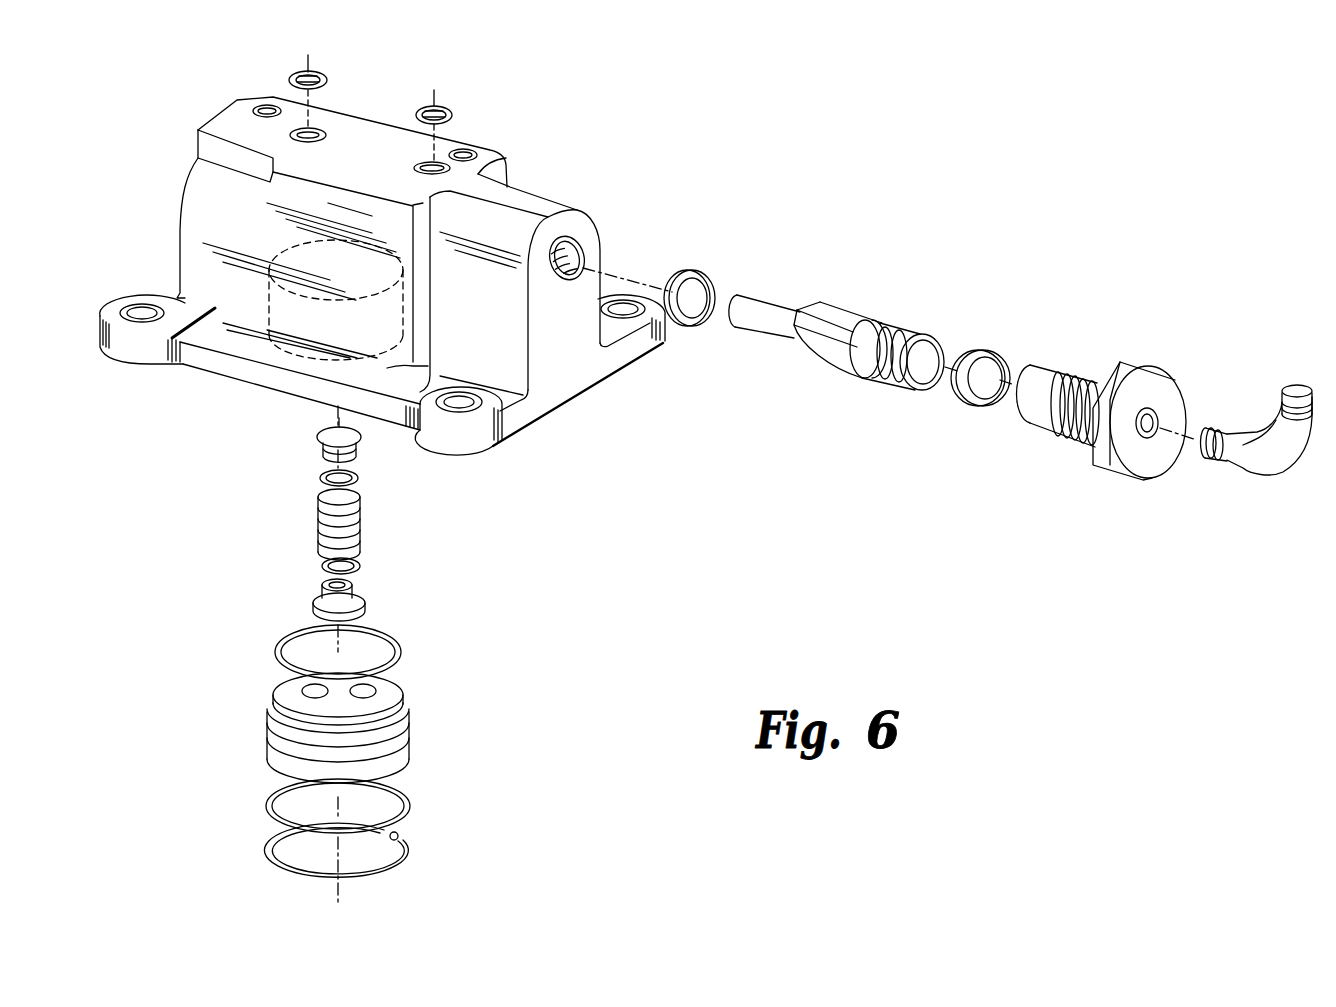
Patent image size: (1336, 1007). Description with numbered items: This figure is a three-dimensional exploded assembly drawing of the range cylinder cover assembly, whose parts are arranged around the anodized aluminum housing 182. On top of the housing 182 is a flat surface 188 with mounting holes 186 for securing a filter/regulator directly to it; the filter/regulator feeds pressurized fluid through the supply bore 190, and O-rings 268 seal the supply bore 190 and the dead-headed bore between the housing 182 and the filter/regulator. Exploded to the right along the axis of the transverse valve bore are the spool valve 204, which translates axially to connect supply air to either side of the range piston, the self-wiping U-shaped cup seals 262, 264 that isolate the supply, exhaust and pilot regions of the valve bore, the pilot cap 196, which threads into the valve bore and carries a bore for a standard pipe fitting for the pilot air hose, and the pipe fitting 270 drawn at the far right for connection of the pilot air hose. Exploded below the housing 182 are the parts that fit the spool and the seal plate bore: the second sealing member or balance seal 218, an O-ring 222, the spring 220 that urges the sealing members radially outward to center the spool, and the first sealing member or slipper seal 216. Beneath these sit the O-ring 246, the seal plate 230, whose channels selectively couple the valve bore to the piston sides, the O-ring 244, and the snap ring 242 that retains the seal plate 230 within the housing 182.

The housing 182 is at (190, 233).
The mounting holes 186 is at (252, 110).
The flat surface 188 is at (487, 155).
The supply bore 190 is at (296, 134).
The O-rings 268 is at (325, 74).
The U-shaped cup seal 262 is at (716, 280).
The spool valve 204 is at (870, 310).
The U-shaped cup seal 264 is at (1000, 350).
The pilot cap 196 is at (1183, 390).
The elbow fitting 270 is at (1285, 474).
The second sealing member 218 is at (317, 440).
The O-ring 222 is at (318, 478).
The spring 220 is at (360, 513).
The first sealing member 216 is at (352, 583).
The O-ring 246 is at (400, 640).
The seal plate 230 is at (410, 733).
The O-ring 244 is at (410, 793).
The snap ring 242 is at (410, 833).